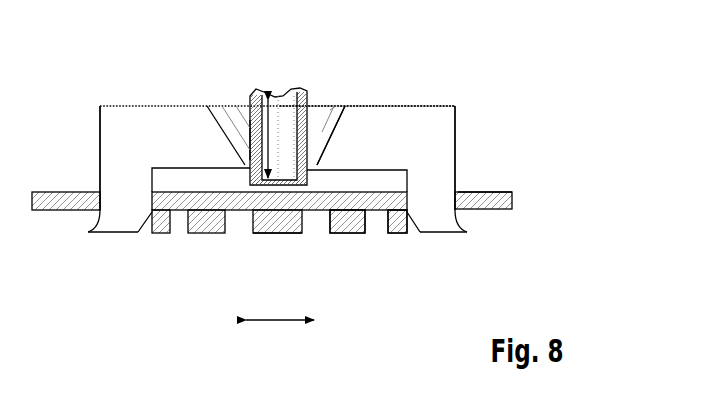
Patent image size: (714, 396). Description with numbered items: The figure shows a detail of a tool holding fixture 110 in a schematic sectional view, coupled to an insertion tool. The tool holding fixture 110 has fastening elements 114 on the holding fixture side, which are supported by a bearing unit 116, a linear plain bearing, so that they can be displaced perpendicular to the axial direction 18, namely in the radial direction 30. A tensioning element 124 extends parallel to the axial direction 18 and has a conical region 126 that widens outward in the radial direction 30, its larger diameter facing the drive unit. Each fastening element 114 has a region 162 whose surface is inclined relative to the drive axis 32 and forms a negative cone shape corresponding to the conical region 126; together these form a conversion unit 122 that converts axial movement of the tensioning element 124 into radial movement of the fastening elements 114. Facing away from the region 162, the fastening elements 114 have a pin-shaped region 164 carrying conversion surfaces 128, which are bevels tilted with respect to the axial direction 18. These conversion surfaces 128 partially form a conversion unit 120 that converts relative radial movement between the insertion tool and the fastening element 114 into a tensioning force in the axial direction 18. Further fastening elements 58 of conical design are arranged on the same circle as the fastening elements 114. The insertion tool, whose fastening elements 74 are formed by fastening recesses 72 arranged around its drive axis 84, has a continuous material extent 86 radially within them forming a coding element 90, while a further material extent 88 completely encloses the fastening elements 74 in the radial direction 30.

The axial direction 18 is at (250, 136).
The radial direction 30 is at (280, 322).
The drive axis 32 is at (302, 269).
The drive axis of the insertion tool 84 is at (281, 248).
The further fastening elements 58 is at (389, 236).
The fastening recesses 72 is at (496, 158).
The fastening elements 74 is at (460, 192).
The material extent 86 is at (279, 236).
The coding element 90 is at (245, 200).
The further material extent 88 is at (498, 192).
The tool holding fixture 110 is at (195, 258).
The fastening elements 114 is at (118, 137).
The bearing unit 116 is at (136, 92).
The conversion unit 120 is at (90, 215).
The conversion unit 122 is at (403, 107).
The tensioning element 124 is at (262, 90).
The conical region 126 is at (328, 117).
The conversion surface 128 is at (88, 228).
The region 162 is at (198, 120).
The pin-shaped region 164 is at (124, 222).